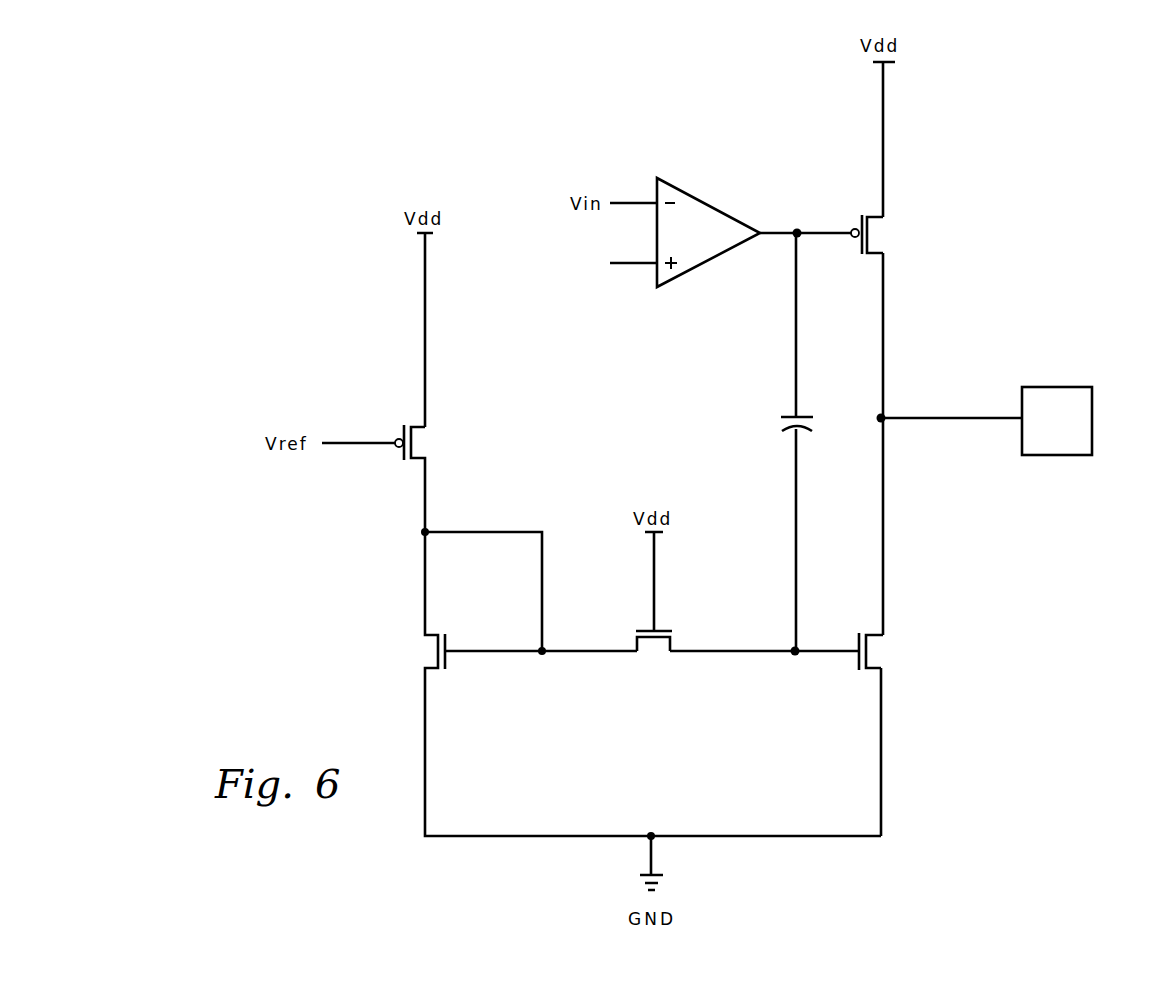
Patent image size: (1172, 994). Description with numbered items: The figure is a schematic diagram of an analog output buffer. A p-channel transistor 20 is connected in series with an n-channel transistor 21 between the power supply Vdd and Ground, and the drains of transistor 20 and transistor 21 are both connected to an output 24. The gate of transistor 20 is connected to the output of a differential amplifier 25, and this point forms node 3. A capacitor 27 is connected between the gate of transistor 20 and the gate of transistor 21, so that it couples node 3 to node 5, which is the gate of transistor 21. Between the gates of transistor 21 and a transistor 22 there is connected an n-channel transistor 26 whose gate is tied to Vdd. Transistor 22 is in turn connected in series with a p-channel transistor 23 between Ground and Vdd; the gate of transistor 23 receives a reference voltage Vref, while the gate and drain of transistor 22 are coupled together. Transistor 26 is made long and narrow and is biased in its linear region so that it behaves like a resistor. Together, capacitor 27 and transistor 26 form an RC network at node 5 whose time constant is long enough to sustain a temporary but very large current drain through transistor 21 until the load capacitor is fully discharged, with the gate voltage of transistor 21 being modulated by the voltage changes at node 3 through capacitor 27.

The node 3 is at (797, 214).
The node 5 is at (793, 674).
The p-channel transistor 20 is at (886, 233).
The n-channel transistor 21 is at (886, 651).
The transistor 22 is at (420, 652).
The p-channel transistor 23 is at (421, 441).
The output 24 is at (1093, 398).
The differential amplifier 25 is at (710, 262).
The n-channel transistor 26 is at (656, 653).
The capacitor 27 is at (818, 421).